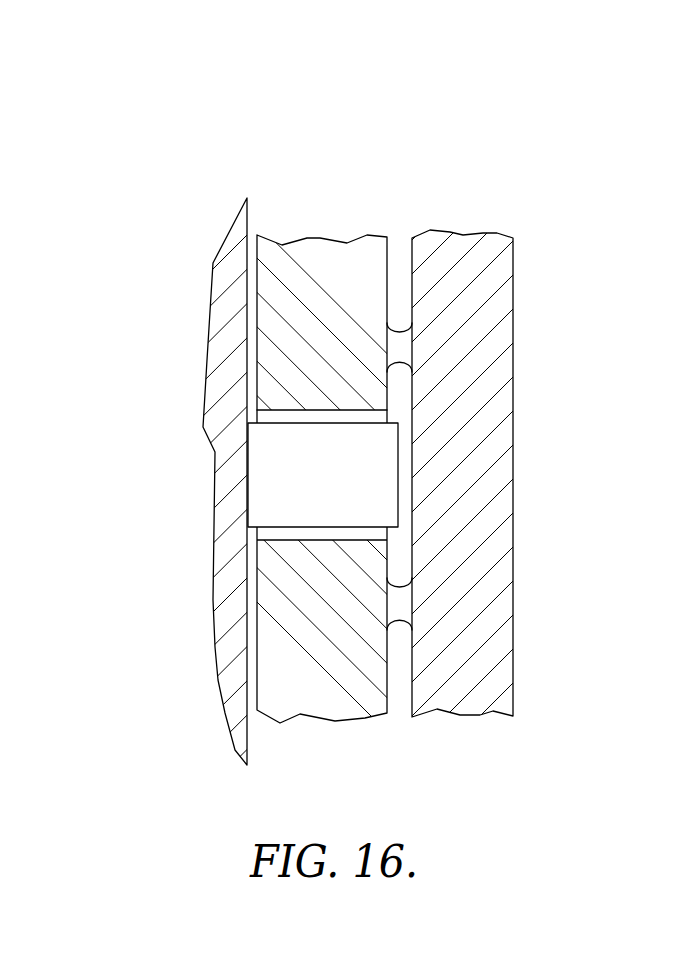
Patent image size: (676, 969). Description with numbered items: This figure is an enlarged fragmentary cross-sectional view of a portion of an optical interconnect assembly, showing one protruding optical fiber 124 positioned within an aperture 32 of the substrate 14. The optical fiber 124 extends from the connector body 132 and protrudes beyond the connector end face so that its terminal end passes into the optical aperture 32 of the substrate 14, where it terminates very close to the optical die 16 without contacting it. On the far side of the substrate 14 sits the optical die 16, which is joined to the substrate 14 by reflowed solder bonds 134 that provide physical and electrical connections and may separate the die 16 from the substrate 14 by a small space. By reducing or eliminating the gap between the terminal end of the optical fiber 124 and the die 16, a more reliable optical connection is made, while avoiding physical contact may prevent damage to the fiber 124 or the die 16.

The substrate 14 is at (337, 269).
The optical die 16 is at (475, 542).
The optical aperture 32 is at (370, 416).
The optical fiber 124 is at (333, 490).
The connector body 132 is at (213, 338).
The reflowed solder bond 134 is at (402, 342).